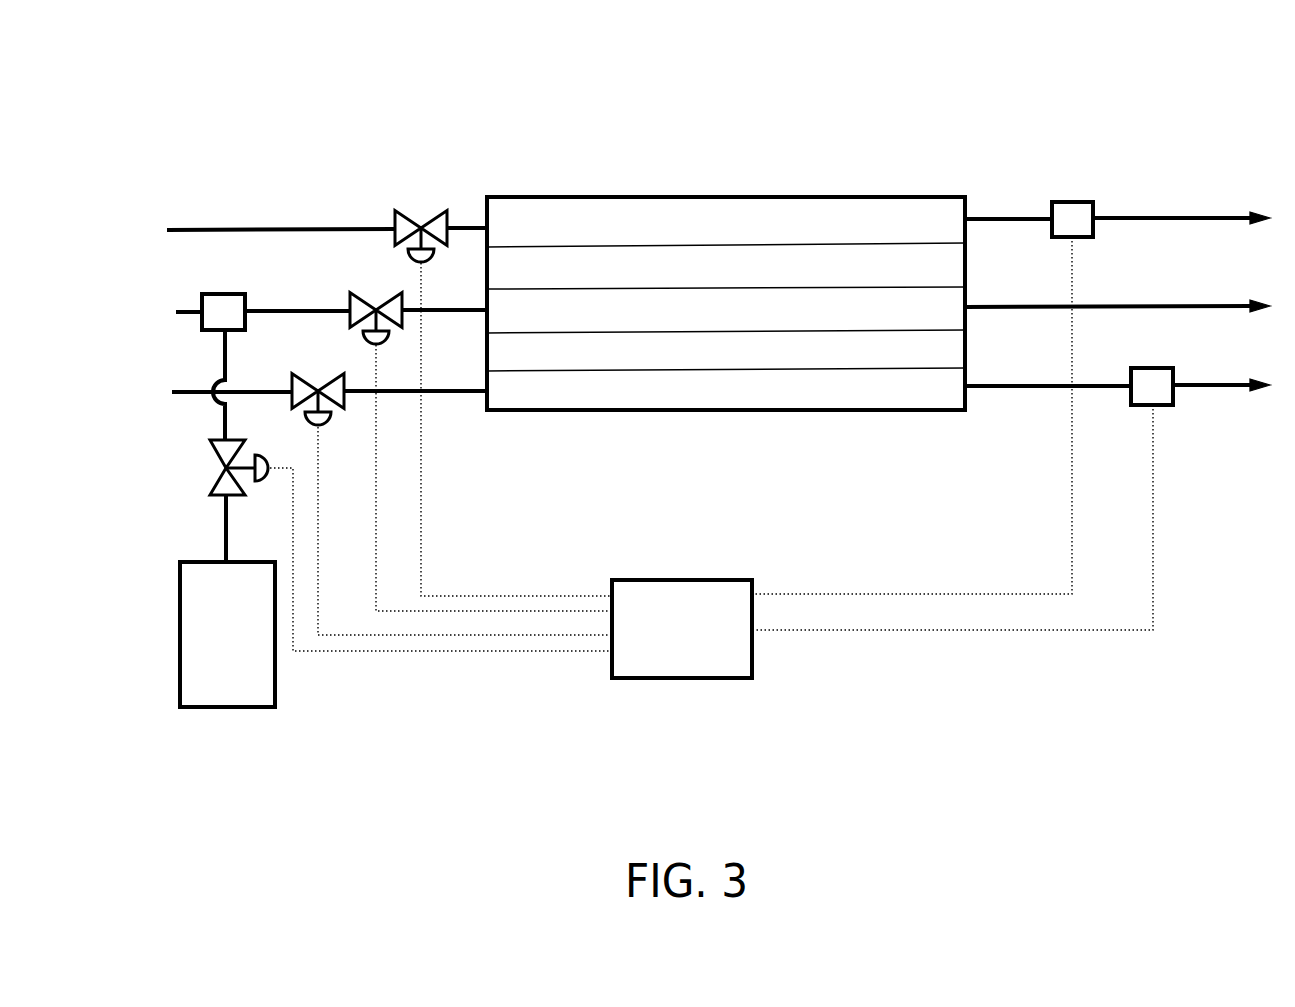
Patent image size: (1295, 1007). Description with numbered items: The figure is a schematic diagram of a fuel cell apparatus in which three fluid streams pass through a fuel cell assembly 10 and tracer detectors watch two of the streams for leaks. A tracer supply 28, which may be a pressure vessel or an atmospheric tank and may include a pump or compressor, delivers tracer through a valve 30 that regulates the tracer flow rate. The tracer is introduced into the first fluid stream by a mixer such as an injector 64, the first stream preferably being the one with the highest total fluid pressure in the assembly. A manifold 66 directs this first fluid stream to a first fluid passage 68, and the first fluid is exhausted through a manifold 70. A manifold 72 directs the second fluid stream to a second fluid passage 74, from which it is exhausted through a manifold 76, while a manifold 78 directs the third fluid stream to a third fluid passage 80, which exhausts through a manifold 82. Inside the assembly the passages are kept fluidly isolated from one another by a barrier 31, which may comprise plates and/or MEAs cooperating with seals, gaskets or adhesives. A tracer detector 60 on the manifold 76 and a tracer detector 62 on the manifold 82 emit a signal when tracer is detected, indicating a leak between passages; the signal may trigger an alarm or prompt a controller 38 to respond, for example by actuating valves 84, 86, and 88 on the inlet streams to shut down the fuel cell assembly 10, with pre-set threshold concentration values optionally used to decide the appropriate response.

The fuel cell assembly 10 is at (807, 113).
The tracer supply 28 is at (205, 588).
The valve 30 is at (212, 455).
The barrier 31 is at (921, 281).
The controller 38 is at (692, 613).
The tracer detector 60 is at (1067, 215).
The tracer detector 62 is at (1157, 388).
The injector 64 is at (215, 312).
The manifold 66 is at (270, 310).
The first fluid passage 68 is at (537, 313).
The manifold 70 is at (1147, 305).
The manifold 72 is at (215, 228).
The second fluid passage 74 is at (847, 222).
The manifold 76 is at (998, 217).
The manifold 78 is at (193, 387).
The third fluid passage 80 is at (735, 387).
The manifold 82 is at (1010, 388).
The valve 84 is at (407, 225).
The valve 86 is at (362, 300).
The valve 88 is at (316, 388).